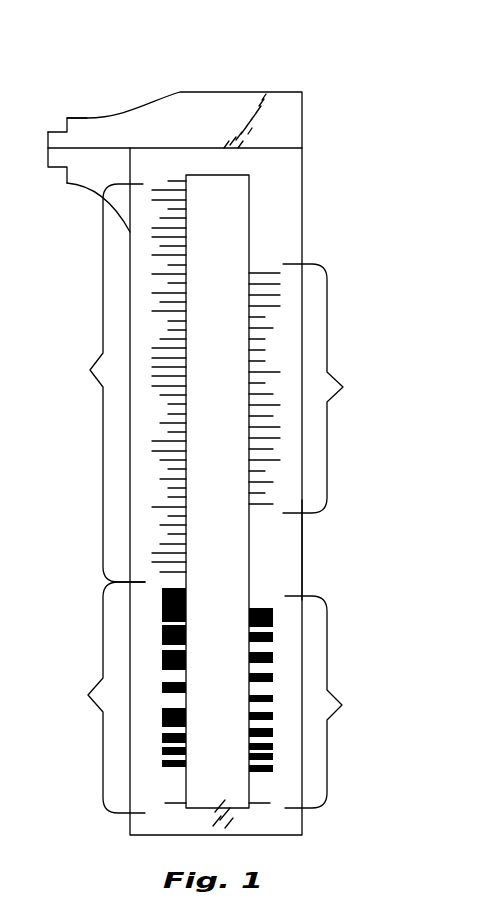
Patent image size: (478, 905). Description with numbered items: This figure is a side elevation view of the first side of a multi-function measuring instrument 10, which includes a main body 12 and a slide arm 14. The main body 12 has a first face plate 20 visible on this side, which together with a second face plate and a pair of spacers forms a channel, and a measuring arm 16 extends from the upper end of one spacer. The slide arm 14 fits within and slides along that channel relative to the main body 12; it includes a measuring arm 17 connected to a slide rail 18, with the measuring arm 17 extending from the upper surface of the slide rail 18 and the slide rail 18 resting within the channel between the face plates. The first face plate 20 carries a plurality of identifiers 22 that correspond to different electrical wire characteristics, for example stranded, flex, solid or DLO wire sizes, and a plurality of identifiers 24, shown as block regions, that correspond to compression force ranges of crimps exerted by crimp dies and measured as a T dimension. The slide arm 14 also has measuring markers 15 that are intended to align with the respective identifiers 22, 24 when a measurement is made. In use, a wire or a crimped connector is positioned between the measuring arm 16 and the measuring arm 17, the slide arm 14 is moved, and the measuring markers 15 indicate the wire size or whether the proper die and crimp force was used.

The multi-function measuring instrument 10 is at (336, 82).
The main body 12 is at (302, 218).
The slide arm 14 is at (215, 92).
The measuring markers 15 is at (187, 487).
The measuring arm 16 is at (77, 176).
The measuring arm 17 is at (87, 121).
The slide rail 18 is at (229, 254).
The first face plate 20 is at (297, 548).
The identifiers 22 is at (89, 370).
The identifiers 24 is at (87, 694).